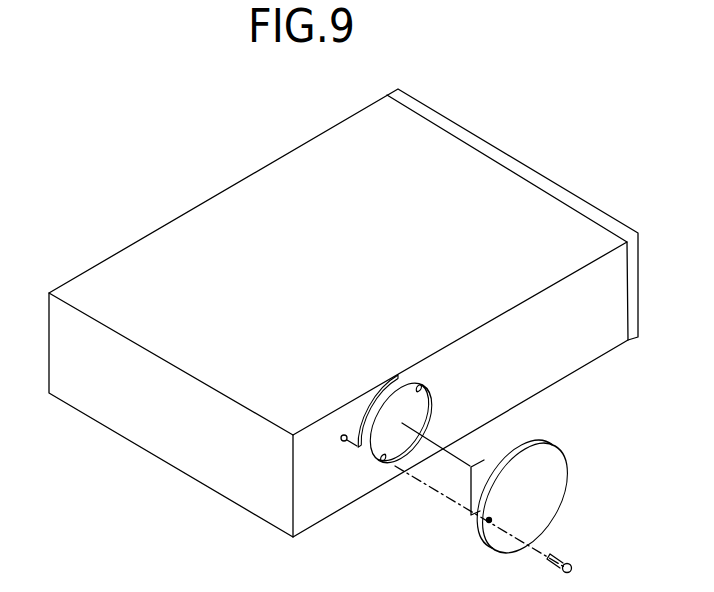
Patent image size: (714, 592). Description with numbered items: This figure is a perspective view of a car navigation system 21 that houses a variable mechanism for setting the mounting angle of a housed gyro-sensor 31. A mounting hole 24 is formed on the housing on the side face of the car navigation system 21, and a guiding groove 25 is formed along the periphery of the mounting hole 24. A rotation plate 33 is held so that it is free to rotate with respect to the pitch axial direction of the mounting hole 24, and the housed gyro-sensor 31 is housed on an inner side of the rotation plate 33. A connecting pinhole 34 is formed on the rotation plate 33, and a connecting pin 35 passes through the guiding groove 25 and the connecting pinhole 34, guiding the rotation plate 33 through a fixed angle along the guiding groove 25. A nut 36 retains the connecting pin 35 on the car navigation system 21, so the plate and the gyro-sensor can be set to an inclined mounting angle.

The car navigation system 21 is at (572, 192).
The mounting hole 24 is at (420, 387).
The guiding groove 25 is at (400, 376).
The nut 36 is at (346, 434).
The housed gyro-sensor 31 is at (496, 452).
The rotation plate 33 is at (564, 465).
The connecting pinhole 34 is at (490, 543).
The connecting pin 35 is at (572, 560).